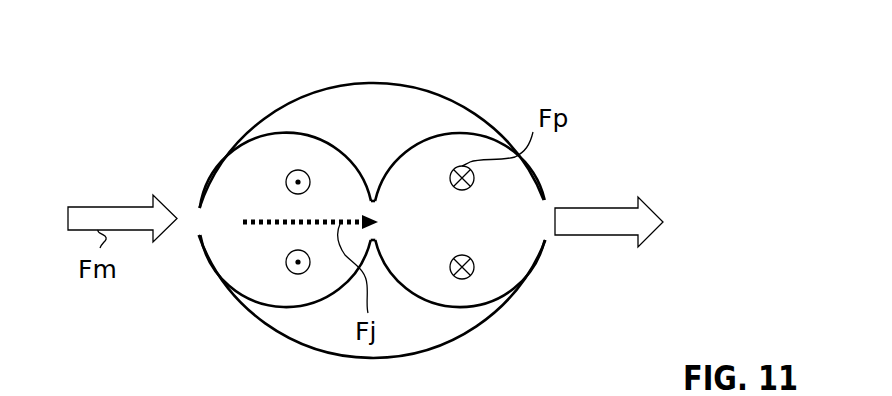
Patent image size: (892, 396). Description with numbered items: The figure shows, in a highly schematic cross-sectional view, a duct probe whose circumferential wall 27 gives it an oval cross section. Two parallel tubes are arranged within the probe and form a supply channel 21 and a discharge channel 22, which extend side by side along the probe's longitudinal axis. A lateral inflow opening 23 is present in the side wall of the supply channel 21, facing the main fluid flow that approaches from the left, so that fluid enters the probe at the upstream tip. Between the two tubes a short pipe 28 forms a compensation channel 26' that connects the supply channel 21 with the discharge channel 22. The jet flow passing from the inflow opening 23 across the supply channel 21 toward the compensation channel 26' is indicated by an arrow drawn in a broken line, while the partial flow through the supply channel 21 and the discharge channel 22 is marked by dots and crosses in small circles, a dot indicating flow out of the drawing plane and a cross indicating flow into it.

The supply channel 21 is at (270, 306).
The discharge channel 22 is at (493, 303).
The inflow opening 23 is at (203, 220).
The second compensation channel 26' is at (357, 155).
The circumferential wall 27 is at (262, 120).
The short pipe 28 is at (376, 199).